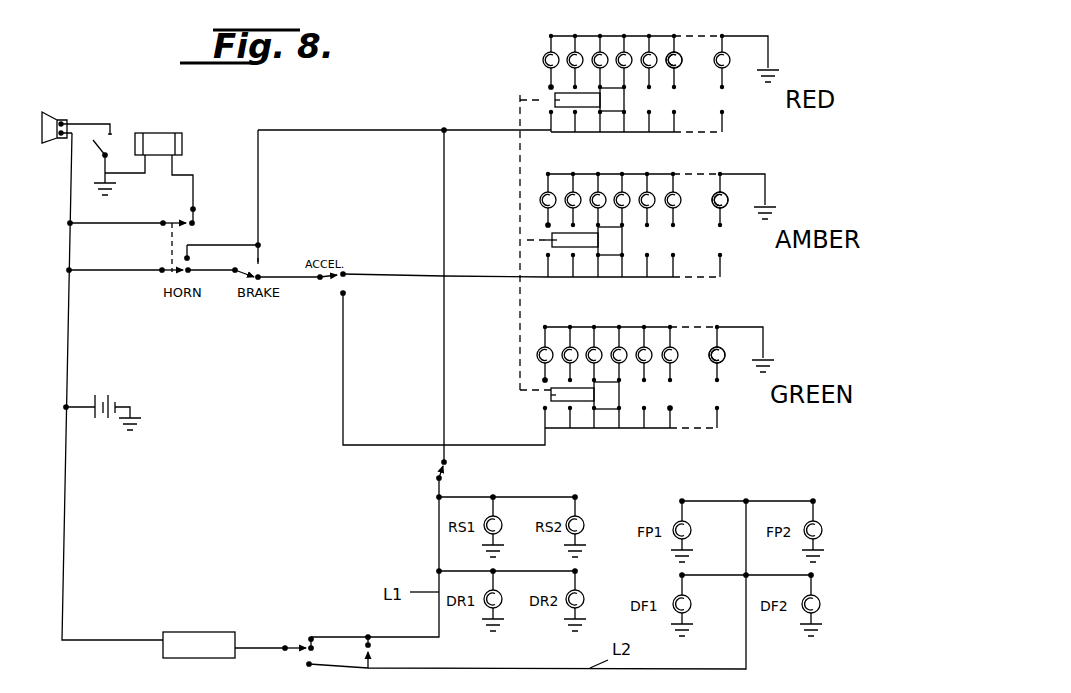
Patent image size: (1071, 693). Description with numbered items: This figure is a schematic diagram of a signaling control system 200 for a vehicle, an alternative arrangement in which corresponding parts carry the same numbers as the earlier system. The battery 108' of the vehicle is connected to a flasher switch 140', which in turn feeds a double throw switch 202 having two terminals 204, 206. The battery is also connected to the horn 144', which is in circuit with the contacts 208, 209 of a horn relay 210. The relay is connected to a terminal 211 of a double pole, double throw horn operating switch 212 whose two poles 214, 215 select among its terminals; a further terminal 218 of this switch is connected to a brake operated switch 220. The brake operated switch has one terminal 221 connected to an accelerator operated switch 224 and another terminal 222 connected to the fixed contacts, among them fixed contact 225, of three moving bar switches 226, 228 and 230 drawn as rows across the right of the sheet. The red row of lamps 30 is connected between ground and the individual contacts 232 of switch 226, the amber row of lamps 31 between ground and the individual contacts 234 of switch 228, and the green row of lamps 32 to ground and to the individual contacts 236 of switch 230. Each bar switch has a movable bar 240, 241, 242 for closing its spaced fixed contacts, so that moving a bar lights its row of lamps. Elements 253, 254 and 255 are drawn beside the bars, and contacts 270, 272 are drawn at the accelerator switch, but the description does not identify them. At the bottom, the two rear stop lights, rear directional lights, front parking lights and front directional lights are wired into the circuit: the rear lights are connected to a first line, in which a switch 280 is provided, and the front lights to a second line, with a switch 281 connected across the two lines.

The control system 200 is at (366, 117).
The double throw switch 202 is at (285, 650).
The terminal 204 is at (311, 638).
The terminal 206 is at (309, 666).
The contact 208 is at (110, 167).
The contact 209 is at (110, 135).
The horn relay 210 is at (167, 133).
The terminal 211 is at (193, 209).
The double pole-double throw horn operating switch 212 is at (172, 247).
The pole 214 is at (173, 222).
The pole 215 is at (165, 273).
The terminal 218 is at (202, 272).
The brake operated switch 220 is at (234, 274).
The terminal 221 is at (260, 277).
The terminal 222 is at (258, 263).
The accelerator operated switch 224 is at (320, 282).
The fixed contact 225 is at (670, 410).
The moving bar switch 226 is at (733, 102).
The moving bar switch 228 is at (735, 252).
The moving bar switch 230 is at (742, 415).
The individual contacts 232 is at (551, 87).
The individual contacts 234 is at (548, 225).
The individual contacts 236 is at (545, 380).
The movable bar 240 is at (626, 100).
The movable bar 241 is at (626, 240).
The movable bar 242 is at (622, 395).
The red bank actuator 253 is at (555, 95).
The amber bank actuator 254 is at (552, 240).
The green bank actuator 255 is at (551, 395).
The accelerator switch contact 270 is at (343, 293).
The accelerator switch contact 272 is at (350, 278).
The switch 280 is at (436, 477).
The switch 281 is at (374, 662).
The red row of lamps 30 is at (681, 64).
The amber row of lamps 31 is at (726, 205).
The green row of lamps 32 is at (724, 363).
The battery 108' is at (130, 403).
The flasher switch 140' is at (224, 632).
The horn 144' is at (72, 154).